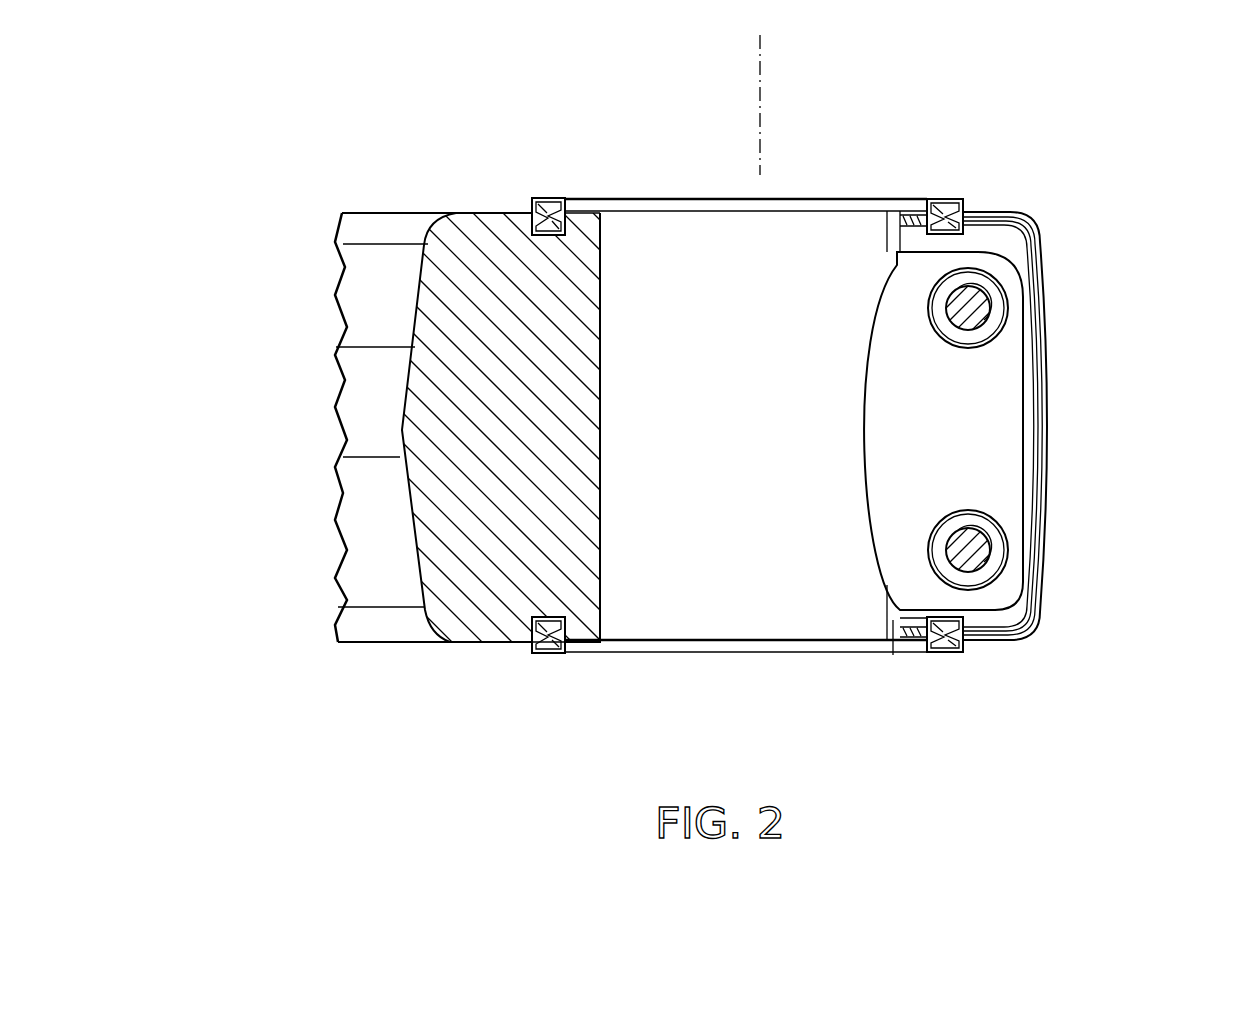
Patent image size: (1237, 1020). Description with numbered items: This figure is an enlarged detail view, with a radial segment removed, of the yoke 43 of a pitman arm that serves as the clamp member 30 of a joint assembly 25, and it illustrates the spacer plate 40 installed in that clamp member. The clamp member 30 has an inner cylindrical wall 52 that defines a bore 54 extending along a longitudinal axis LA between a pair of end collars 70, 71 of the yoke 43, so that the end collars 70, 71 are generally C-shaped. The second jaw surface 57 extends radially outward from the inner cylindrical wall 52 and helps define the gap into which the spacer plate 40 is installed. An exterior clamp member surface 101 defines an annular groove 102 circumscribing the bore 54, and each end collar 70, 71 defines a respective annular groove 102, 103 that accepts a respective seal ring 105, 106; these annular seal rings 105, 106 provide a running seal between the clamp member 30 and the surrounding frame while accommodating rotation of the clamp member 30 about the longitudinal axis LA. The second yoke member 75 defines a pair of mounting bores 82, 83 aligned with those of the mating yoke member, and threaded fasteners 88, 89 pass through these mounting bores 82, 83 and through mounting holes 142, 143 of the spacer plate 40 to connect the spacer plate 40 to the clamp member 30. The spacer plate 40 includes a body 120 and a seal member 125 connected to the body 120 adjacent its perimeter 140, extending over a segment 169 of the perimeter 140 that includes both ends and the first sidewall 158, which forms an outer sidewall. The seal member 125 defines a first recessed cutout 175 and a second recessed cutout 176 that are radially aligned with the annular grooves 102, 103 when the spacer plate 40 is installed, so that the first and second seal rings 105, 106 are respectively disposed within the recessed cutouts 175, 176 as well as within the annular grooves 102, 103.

The joint assembly 25 is at (230, 128).
The clamp member 30 is at (388, 213).
The yoke 43 is at (373, 343).
The end collar 70 is at (500, 213).
The exterior clamp member surface 101 is at (459, 205).
The annular groove 102 is at (530, 230).
The seal ring 105 is at (553, 213).
The annular groove 103 is at (511, 642).
The seal ring 106 is at (548, 645).
The end collar 71 is at (470, 642).
The bore 54 is at (672, 262).
The inner cylindrical wall 52 is at (736, 440).
The segment 169 is at (920, 273).
The second yoke member 75 is at (890, 603).
The second jaw surface 57 is at (893, 655).
The first recessed cutout 175 is at (922, 245).
The second recessed cutout 176 is at (1000, 640).
The spacer plate 40 is at (988, 423).
The seal member 125 is at (1046, 508).
The first sidewall 158 is at (1023, 435).
The mounting bore 82 is at (965, 292).
The threaded fastener 88 is at (972, 338).
The mounting bore 83 is at (975, 550).
The threaded fastener 89 is at (978, 580).
The mounting hole 142 is at (930, 325).
The mounting hole 143 is at (937, 537).
The body 120 is at (908, 487).
The perimeter 140 is at (860, 455).
The longitudinal axis LA is at (760, 103).